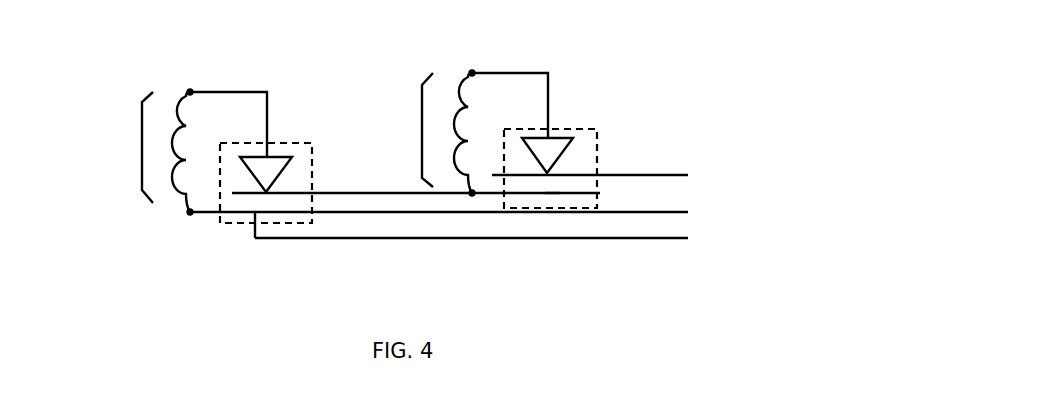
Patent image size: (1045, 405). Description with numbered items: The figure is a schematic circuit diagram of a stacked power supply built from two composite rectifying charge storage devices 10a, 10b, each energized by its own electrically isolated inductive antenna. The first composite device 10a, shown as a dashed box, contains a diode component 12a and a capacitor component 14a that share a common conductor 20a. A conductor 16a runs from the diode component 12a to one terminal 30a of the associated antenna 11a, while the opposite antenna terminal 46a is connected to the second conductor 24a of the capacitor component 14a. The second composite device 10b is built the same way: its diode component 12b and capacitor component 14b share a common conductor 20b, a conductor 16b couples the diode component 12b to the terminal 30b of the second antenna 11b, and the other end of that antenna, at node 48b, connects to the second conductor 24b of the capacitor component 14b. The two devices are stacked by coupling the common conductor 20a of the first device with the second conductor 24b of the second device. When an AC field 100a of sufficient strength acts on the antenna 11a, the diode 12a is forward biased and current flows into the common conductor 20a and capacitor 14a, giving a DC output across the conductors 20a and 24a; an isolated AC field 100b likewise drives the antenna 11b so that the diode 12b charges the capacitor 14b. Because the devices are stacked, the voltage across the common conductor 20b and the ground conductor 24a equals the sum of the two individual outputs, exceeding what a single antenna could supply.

The AC field 100a is at (141, 145).
The isolated AC field 100b is at (421, 118).
The antenna 11a is at (187, 92).
The second antenna 11b is at (467, 72).
The antenna terminal 30a is at (190, 92).
The antenna terminal 30b is at (472, 73).
The conductor 16a is at (247, 92).
The conductor 16b is at (527, 73).
The diode component 12a is at (278, 160).
The diode component 12b is at (558, 143).
The first composite rectifying charge storage device 10a is at (237, 227).
The second composite rectifying charge storage device 10b is at (600, 143).
The capacitor component 14a is at (267, 205).
The capacitor component 14b is at (552, 187).
The common conductor 20a is at (635, 175).
The common conductor 20b is at (333, 193).
The second conductor 24a is at (367, 238).
The second conductor 24b is at (650, 213).
The antenna terminal 46a is at (188, 215).
The connection node 48b is at (472, 193).